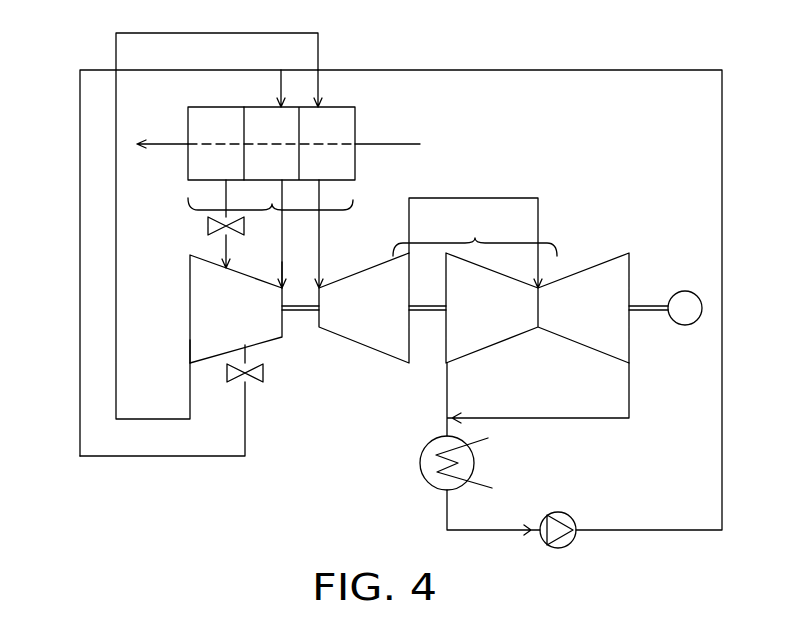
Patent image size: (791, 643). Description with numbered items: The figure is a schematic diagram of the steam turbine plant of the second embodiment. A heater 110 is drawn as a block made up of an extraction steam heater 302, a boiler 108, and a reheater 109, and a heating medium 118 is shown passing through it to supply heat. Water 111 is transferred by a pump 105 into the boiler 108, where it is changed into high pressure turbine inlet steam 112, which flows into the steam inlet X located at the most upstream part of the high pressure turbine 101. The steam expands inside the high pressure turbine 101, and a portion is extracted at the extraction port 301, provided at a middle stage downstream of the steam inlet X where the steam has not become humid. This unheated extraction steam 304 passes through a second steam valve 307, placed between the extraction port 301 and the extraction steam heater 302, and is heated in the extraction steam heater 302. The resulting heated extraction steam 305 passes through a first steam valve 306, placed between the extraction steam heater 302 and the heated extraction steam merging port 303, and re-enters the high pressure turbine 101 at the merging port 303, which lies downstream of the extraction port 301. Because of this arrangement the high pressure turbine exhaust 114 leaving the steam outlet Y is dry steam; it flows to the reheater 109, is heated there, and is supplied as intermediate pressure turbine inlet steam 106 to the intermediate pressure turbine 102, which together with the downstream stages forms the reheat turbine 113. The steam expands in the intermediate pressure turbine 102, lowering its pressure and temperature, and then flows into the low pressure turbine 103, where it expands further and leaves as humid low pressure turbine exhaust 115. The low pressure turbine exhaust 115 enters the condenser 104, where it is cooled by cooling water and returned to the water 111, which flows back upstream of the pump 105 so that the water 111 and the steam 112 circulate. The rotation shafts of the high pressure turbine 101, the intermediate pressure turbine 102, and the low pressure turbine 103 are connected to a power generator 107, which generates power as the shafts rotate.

The high pressure turbine 101 is at (190, 325).
The intermediate pressure turbine 102 is at (355, 343).
The low pressure turbine 103 is at (603, 262).
The condenser 104 is at (420, 460).
The pump 105 is at (557, 512).
The intermediate pressure turbine inlet steam 106 is at (320, 247).
The power generator 107 is at (685, 291).
The boiler 108 is at (263, 106).
The reheater 109 is at (337, 106).
The heater 110 is at (271, 176).
The water 111 is at (548, 70).
The high pressure turbine inlet steam 112 is at (280, 262).
The reheat turbine 113 is at (475, 243).
The high pressure turbine exhaust 114 is at (116, 325).
The low pressure turbine exhaust 115 is at (447, 388).
The heating medium 118 is at (397, 143).
The extraction port 301 is at (250, 345).
The extraction steam heater 302 is at (189, 106).
The heated extraction steam merging port 303 is at (223, 275).
The unheated extraction steam 304 is at (247, 418).
The heated extraction steam 305 is at (226, 196).
The first steam valve 306 is at (210, 222).
The second steam valve 307 is at (264, 373).
The steam inlet X is at (285, 286).
The steam outlet Y is at (190, 362).